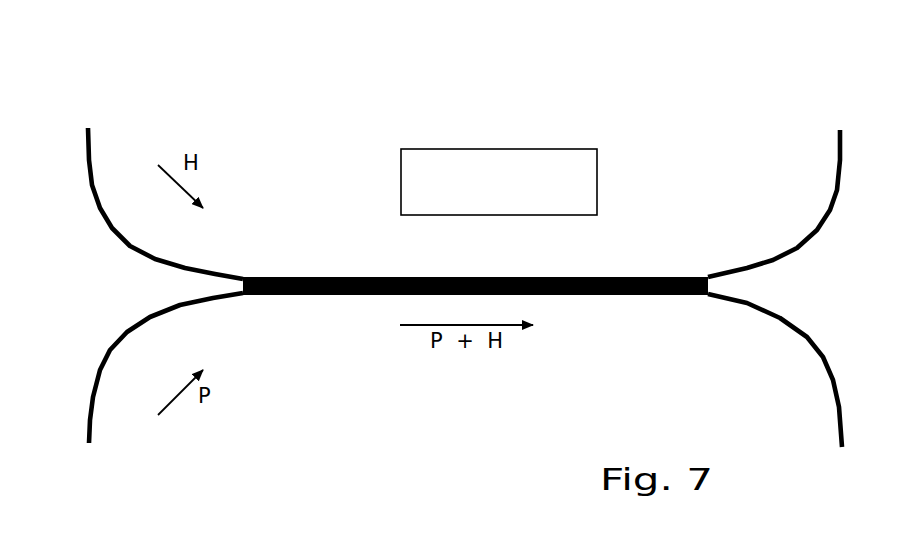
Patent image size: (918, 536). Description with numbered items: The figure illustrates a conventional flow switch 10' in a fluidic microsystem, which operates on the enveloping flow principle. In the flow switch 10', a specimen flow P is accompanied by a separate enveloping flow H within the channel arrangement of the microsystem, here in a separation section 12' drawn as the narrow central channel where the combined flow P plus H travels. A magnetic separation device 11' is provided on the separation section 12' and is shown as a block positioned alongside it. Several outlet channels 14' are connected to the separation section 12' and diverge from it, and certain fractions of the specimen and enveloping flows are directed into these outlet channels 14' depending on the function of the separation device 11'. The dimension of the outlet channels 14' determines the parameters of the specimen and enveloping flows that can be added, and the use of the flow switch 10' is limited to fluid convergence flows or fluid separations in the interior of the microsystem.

The flow switch 10' is at (465, 287).
The magnetic separation device 11' is at (499, 181).
The separation section 12' is at (475, 257).
The outlet channels 14' is at (465, 287).